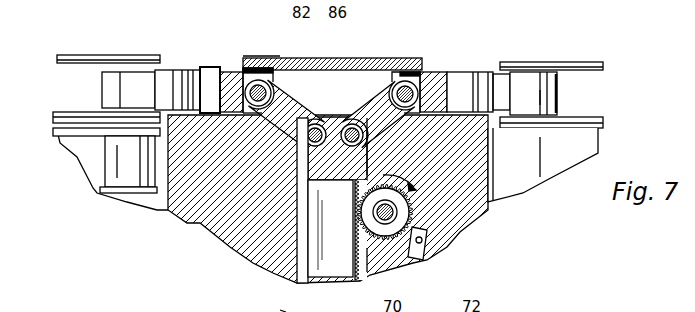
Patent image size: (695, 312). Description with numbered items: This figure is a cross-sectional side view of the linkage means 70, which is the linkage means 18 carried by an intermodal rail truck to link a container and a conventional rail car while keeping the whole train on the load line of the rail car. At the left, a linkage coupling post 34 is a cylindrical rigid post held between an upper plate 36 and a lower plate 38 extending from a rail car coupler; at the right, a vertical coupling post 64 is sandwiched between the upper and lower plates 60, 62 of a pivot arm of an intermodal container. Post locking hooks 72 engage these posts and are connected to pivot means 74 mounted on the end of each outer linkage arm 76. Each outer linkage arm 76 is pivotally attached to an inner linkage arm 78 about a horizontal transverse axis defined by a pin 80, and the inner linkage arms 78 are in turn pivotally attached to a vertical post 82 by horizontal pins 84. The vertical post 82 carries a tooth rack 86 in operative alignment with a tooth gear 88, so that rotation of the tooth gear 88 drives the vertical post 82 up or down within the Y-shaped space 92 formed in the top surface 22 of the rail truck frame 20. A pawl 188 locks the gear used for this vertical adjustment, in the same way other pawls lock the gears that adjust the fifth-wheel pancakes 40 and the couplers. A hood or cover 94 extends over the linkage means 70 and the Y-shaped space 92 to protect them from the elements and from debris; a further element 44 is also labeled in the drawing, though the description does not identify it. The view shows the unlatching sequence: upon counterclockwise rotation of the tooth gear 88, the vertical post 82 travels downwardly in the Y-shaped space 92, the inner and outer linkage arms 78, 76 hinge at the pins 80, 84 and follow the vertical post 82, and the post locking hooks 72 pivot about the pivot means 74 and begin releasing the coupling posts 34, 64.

The linkage means 18 is at (496, 21).
The rail truck frame 20 is at (526, 198).
The top surface 22 is at (63, 153).
The linkage coupling post 34 is at (110, 170).
The upper plate 36 is at (63, 133).
The lower plate 38 is at (95, 190).
The fifth-wheel pancake 40 is at (399, 211).
The plate 44 is at (272, 56).
The upper plate 60 is at (100, 64).
The lower plate 62 is at (77, 117).
The vertical coupling post 64 is at (130, 55).
The linkage means 70 is at (343, 50).
The post locking hook 72 is at (162, 72).
The pivot means 74 is at (200, 67).
The outer linkage arm 76 is at (217, 73).
The inner linkage arm 78 is at (300, 75).
The pin 80 is at (224, 80).
The vertical post 82 is at (318, 279).
The horizontal pin 84 is at (307, 114).
The tooth rack 86 is at (362, 281).
The tooth gear 88 is at (398, 215).
The Y-shaped space 92 is at (300, 248).
The hood or cover 94 is at (280, 310).
The pawl 188 is at (413, 257).